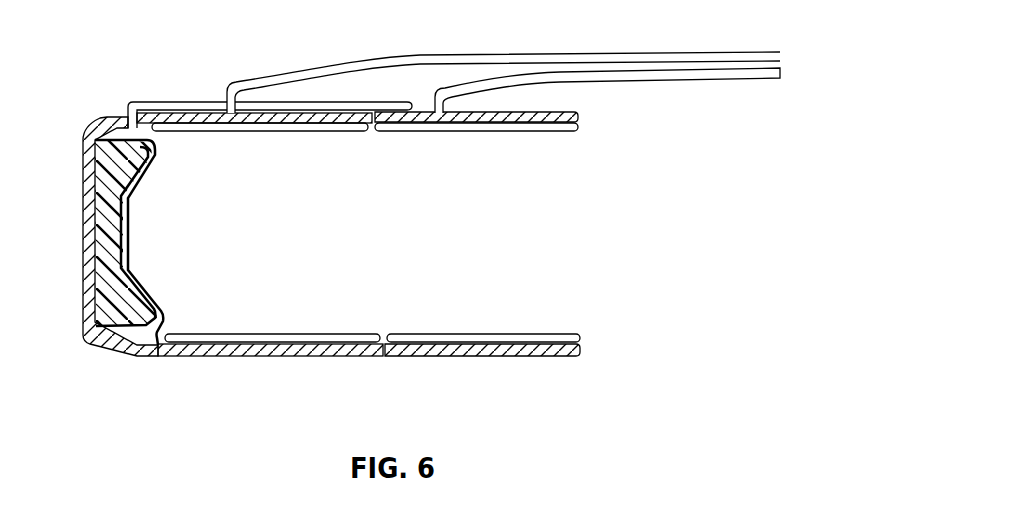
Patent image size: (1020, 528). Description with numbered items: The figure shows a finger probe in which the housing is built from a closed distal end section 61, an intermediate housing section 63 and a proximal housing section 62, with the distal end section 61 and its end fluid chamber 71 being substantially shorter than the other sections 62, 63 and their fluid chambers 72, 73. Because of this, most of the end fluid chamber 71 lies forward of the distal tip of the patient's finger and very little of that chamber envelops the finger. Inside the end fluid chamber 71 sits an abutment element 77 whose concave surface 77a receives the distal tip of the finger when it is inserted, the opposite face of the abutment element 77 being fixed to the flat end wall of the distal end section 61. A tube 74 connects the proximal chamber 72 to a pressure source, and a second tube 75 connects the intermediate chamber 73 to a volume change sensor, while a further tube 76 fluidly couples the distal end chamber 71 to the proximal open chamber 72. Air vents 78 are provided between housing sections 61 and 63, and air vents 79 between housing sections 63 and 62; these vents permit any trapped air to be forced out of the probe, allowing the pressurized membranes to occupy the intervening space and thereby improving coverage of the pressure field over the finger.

The closed distal end section 61 is at (87, 133).
The abutment element 77 is at (121, 155).
The end fluid chamber 71 is at (128, 199).
The concave surface 77a is at (127, 250).
The further tube 76 is at (193, 102).
The intermediate chamber 73 is at (333, 131).
The proximal chamber 72 is at (530, 130).
The intermediate housing section 63 is at (285, 131).
The proximal housing section 62 is at (530, 112).
The second tube 75 is at (312, 71).
The tube 74 is at (723, 79).
The air vents 78 is at (158, 345).
The air vents 79 is at (383, 354).